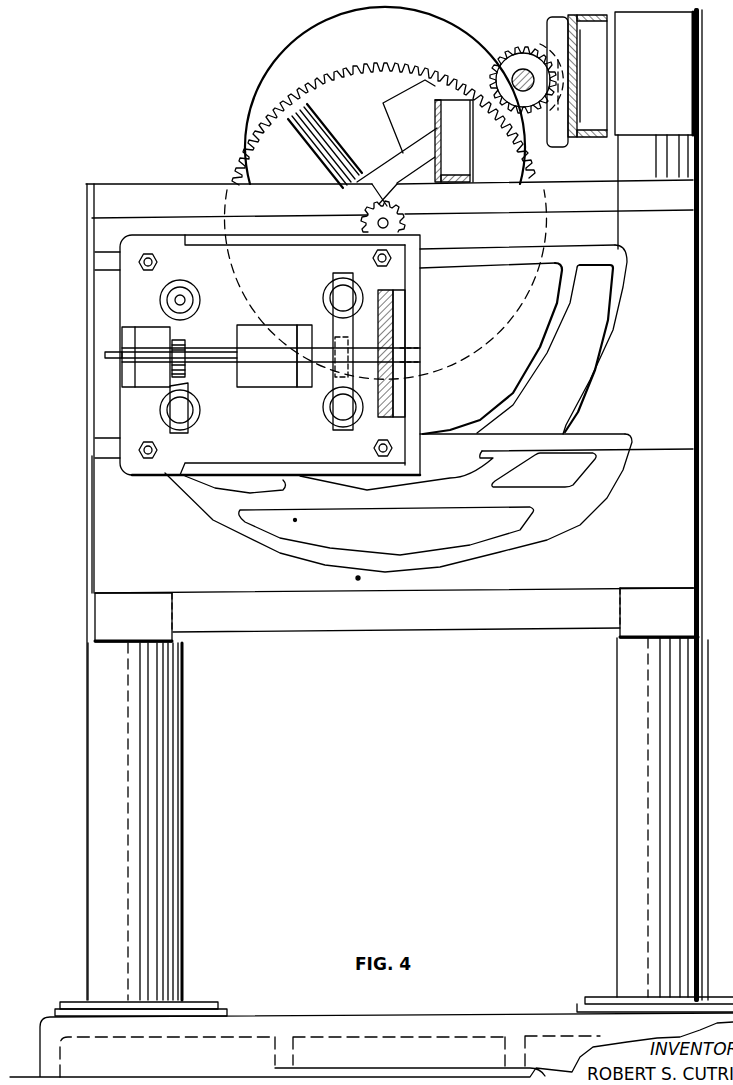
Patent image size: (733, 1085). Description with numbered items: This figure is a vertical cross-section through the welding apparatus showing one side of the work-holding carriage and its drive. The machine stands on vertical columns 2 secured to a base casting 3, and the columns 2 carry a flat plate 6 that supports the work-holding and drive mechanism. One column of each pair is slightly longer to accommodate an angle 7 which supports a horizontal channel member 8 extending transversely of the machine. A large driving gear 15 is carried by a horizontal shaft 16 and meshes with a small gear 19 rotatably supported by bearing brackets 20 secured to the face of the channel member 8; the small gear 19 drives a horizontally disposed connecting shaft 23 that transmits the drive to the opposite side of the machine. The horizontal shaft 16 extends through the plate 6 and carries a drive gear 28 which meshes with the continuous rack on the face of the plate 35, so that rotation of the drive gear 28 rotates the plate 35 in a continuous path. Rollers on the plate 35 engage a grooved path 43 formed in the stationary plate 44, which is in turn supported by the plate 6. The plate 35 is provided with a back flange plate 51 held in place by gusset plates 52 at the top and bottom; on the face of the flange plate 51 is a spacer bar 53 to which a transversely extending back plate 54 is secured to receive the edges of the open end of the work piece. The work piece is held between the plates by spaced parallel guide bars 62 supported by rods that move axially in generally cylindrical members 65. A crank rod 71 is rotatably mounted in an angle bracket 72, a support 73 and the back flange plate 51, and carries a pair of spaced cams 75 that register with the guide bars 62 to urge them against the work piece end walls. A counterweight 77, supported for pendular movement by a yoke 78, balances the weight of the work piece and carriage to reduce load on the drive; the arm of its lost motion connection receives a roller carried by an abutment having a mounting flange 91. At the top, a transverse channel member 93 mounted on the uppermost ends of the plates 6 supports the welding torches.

The vertical column 2 is at (103, 812).
The base casting 3 is at (253, 1022).
The flat plate 6 is at (161, 190).
The angle 7 is at (15, 503).
The horizontal channel member 8 is at (577, 32).
The large driving gear 15 is at (300, 100).
The horizontal shaft 16 is at (368, 212).
The small gear 19 is at (503, 48).
The bearing bracket 20 is at (542, 92).
The connecting shaft 23 is at (512, 80).
The drive gear 28 is at (397, 213).
The plate 35 is at (168, 465).
The grooved path 43 is at (458, 437).
The stationary plate 44 is at (105, 567).
The back flange plate 51 is at (415, 337).
The gusset plate 52 is at (285, 241).
The spacer bar 53 is at (400, 327).
The back plate 54 is at (407, 378).
The guide bar 62 is at (185, 418).
The cylindrical member 65 is at (200, 300).
The crank rod 71 is at (228, 347).
The angle bracket 72 is at (150, 380).
The support 73 is at (303, 383).
The cam 75 is at (340, 337).
The counterweight 77 is at (405, 100).
The yoke 78 is at (383, 165).
The mounting flange 91 is at (262, 383).
The transverse channel member 93 is at (470, 160).